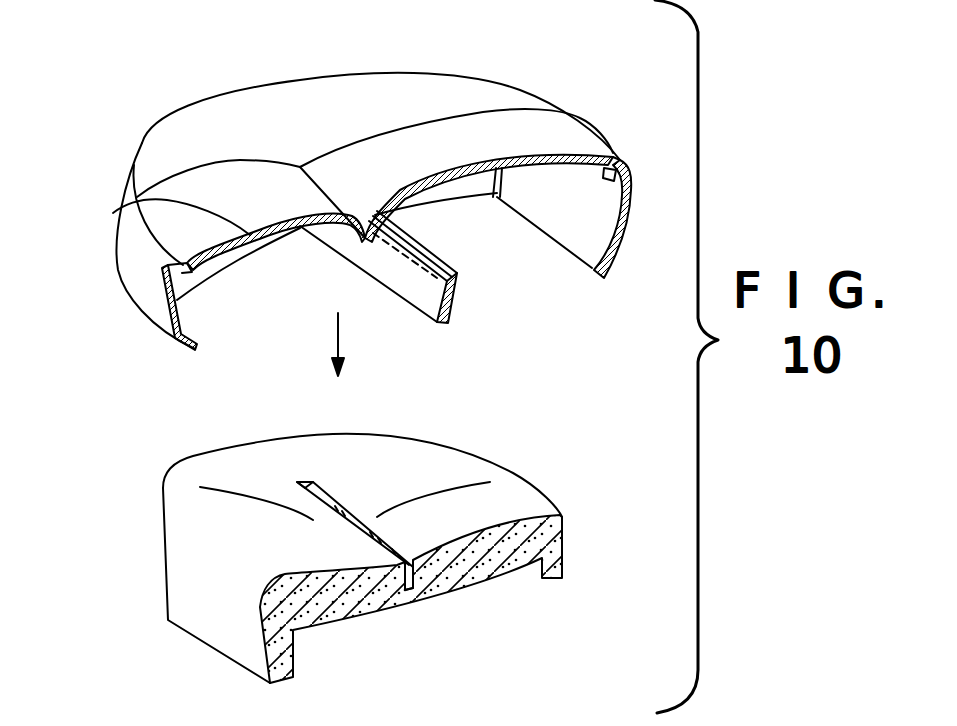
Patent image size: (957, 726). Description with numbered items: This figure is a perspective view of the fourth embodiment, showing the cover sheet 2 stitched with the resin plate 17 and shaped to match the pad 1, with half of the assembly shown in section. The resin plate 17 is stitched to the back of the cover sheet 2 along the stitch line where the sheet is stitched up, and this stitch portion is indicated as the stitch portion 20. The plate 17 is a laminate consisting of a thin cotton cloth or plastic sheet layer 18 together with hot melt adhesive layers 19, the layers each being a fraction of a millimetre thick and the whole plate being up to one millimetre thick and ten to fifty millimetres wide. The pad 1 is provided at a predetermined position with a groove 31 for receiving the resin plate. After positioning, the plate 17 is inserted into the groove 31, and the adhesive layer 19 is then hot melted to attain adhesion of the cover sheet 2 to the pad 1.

The pad 1 is at (317, 558).
The cover sheet 2 is at (113, 213).
The resin plate 17 is at (381, 293).
The cotton cloth or plastic sheet layer 18 is at (420, 293).
The hot melt adhesive layer 19 is at (453, 300).
The stitch portion 20 is at (413, 262).
The groove 31 is at (415, 583).